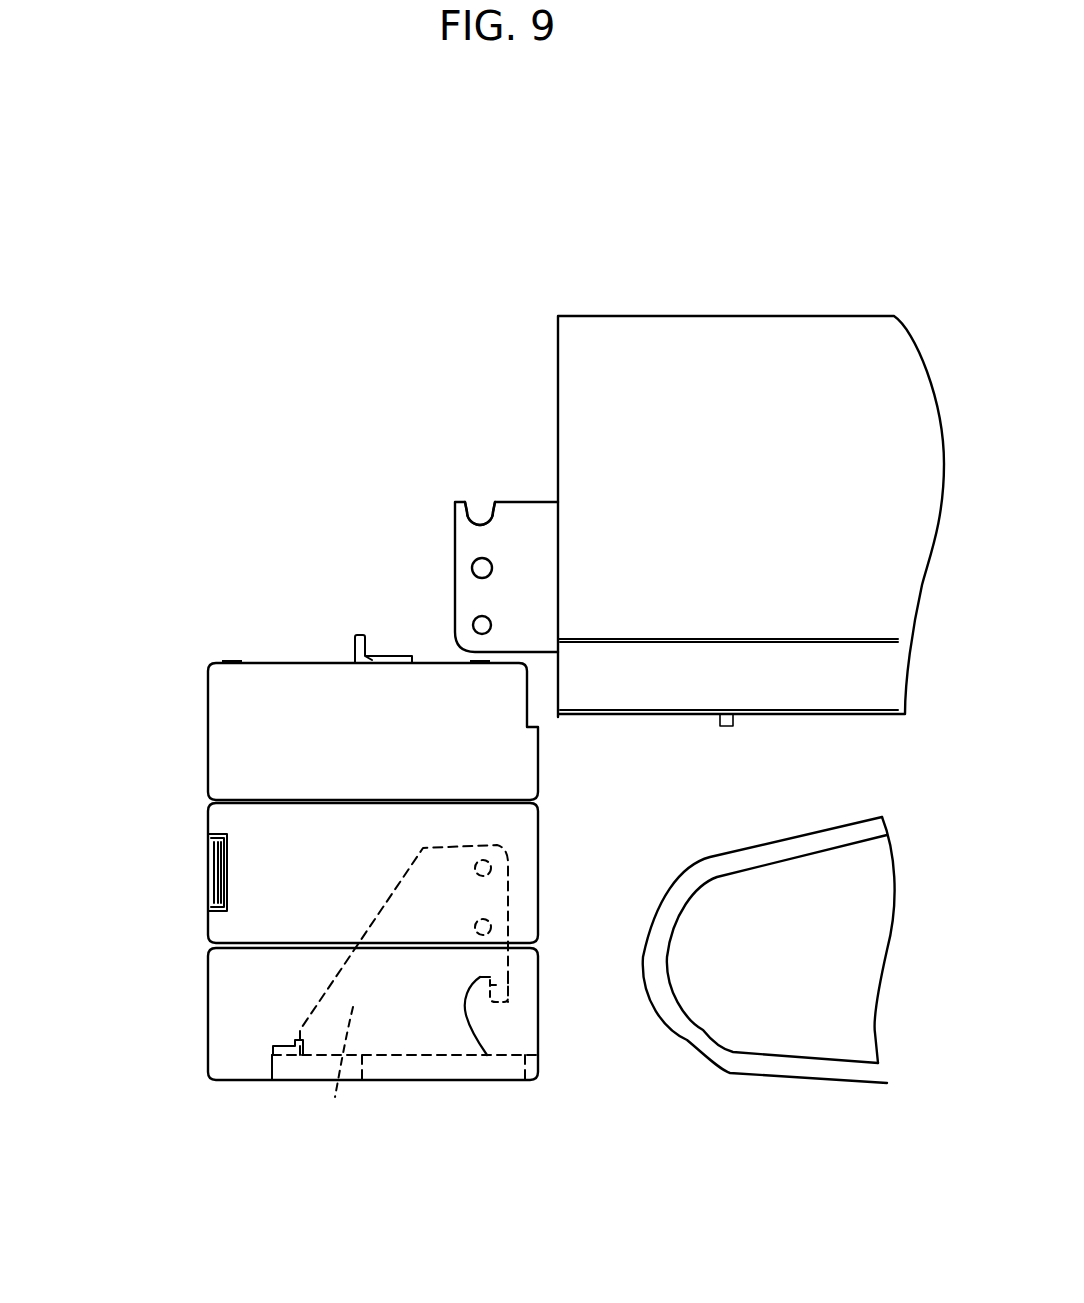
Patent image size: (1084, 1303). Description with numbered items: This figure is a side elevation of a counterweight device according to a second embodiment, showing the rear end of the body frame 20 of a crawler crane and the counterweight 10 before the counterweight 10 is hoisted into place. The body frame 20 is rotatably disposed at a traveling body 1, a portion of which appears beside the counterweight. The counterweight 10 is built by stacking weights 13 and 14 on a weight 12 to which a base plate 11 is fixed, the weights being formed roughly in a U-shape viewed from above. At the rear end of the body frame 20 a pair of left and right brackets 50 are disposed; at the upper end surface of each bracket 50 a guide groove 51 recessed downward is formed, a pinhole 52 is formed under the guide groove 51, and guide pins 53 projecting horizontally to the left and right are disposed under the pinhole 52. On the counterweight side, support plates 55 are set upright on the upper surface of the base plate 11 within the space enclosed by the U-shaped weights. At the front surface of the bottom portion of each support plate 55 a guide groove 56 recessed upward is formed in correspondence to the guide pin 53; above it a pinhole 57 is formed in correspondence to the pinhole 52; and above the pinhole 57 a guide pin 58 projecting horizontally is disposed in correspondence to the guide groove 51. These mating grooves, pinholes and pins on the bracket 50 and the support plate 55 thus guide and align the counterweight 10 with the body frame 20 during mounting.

The traveling body 1 is at (720, 1055).
The counterweight 10 is at (110, 654).
The base plate 11 is at (460, 1063).
The weight 12 is at (208, 1010).
The weight 13 is at (208, 891).
The weight 14 is at (208, 719).
The body frame 20 is at (747, 278).
The bracket 50 is at (534, 560).
The guide groove 51 is at (480, 513).
The pinhole 52 is at (471, 565).
The guide pin 53 is at (472, 620).
The support plate 55 is at (335, 1097).
The guide groove 56 is at (500, 981).
The pinhole 57 is at (495, 922).
The guide pin 58 is at (490, 862).